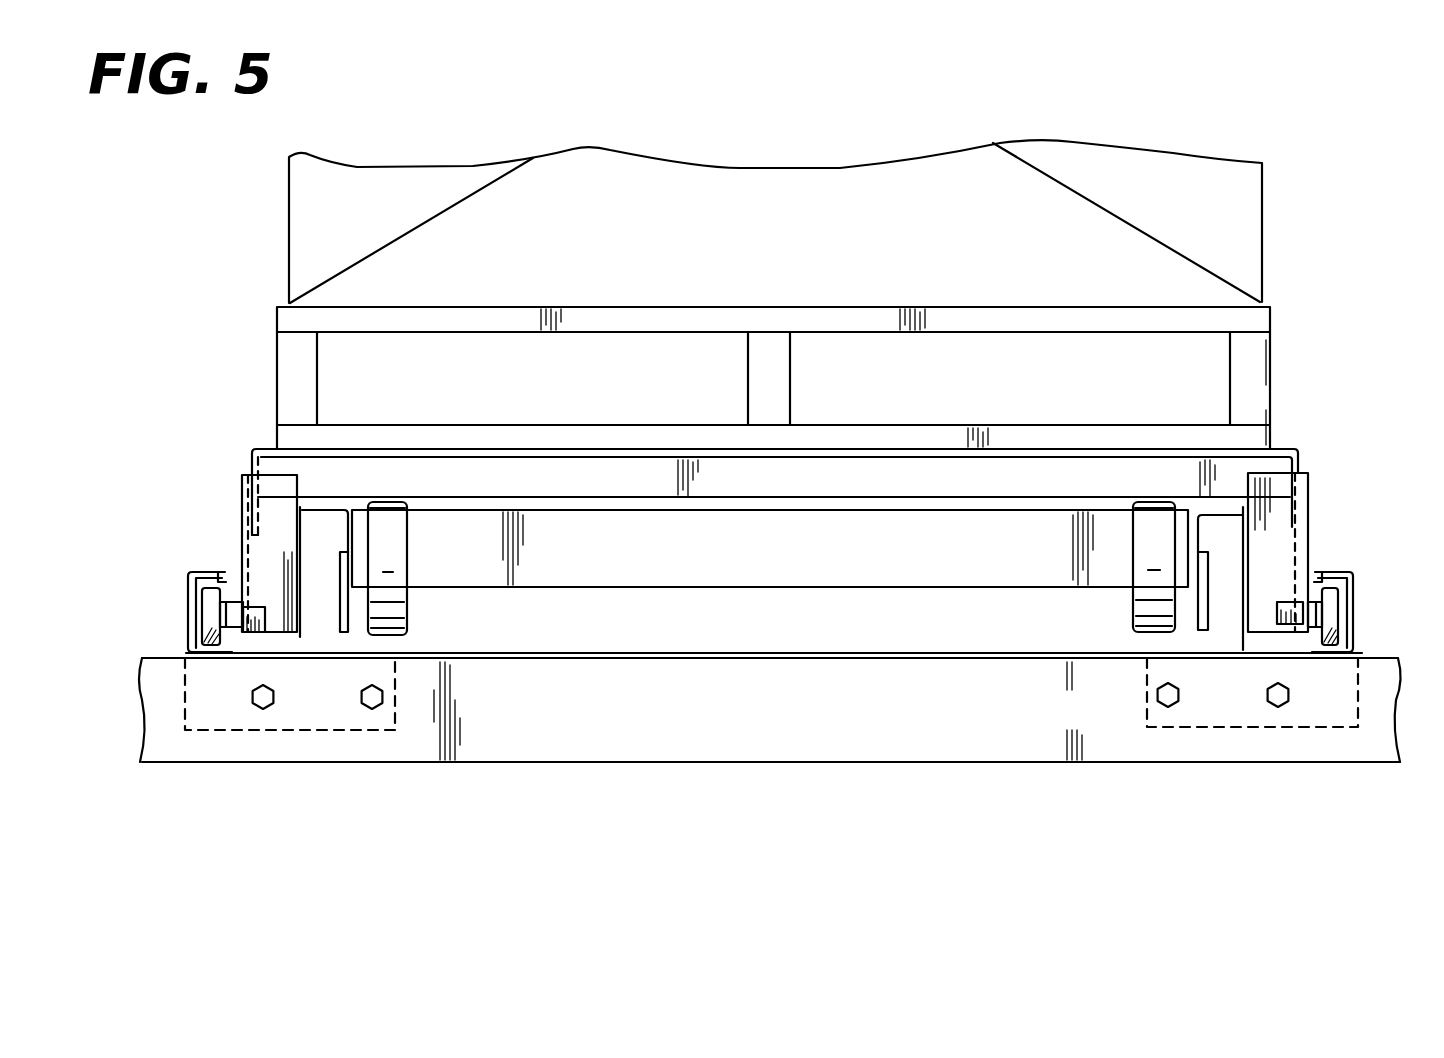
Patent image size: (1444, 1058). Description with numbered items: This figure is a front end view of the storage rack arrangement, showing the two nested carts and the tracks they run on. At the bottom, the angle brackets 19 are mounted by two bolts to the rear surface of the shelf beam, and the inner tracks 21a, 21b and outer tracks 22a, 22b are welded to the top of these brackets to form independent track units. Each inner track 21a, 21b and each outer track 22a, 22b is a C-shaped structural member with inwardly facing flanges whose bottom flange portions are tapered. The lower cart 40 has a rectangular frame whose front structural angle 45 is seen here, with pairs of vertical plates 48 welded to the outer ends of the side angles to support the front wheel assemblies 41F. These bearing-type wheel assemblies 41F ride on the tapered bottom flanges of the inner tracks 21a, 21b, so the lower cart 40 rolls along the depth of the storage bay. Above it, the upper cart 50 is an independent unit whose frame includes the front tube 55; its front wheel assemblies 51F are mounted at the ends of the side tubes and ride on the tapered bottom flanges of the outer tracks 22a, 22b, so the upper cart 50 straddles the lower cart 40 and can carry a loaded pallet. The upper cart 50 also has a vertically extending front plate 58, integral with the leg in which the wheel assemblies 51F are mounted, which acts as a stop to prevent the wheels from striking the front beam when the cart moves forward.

The angle bracket 19 is at (208, 723).
The inner track 21a is at (313, 655).
The inner track 21b is at (1238, 647).
The outer track 22a is at (190, 577).
The outer track 22b is at (1347, 572).
The lower cart 40 is at (808, 548).
The front wheel assembly 41F is at (330, 648).
The front structural angle 45 is at (634, 563).
The vertical plate 48 is at (1200, 592).
The upper cart 50 is at (345, 472).
The front wheel assembly 51F is at (213, 613).
The front tube 55 is at (632, 490).
The front plate 58 is at (1310, 512).